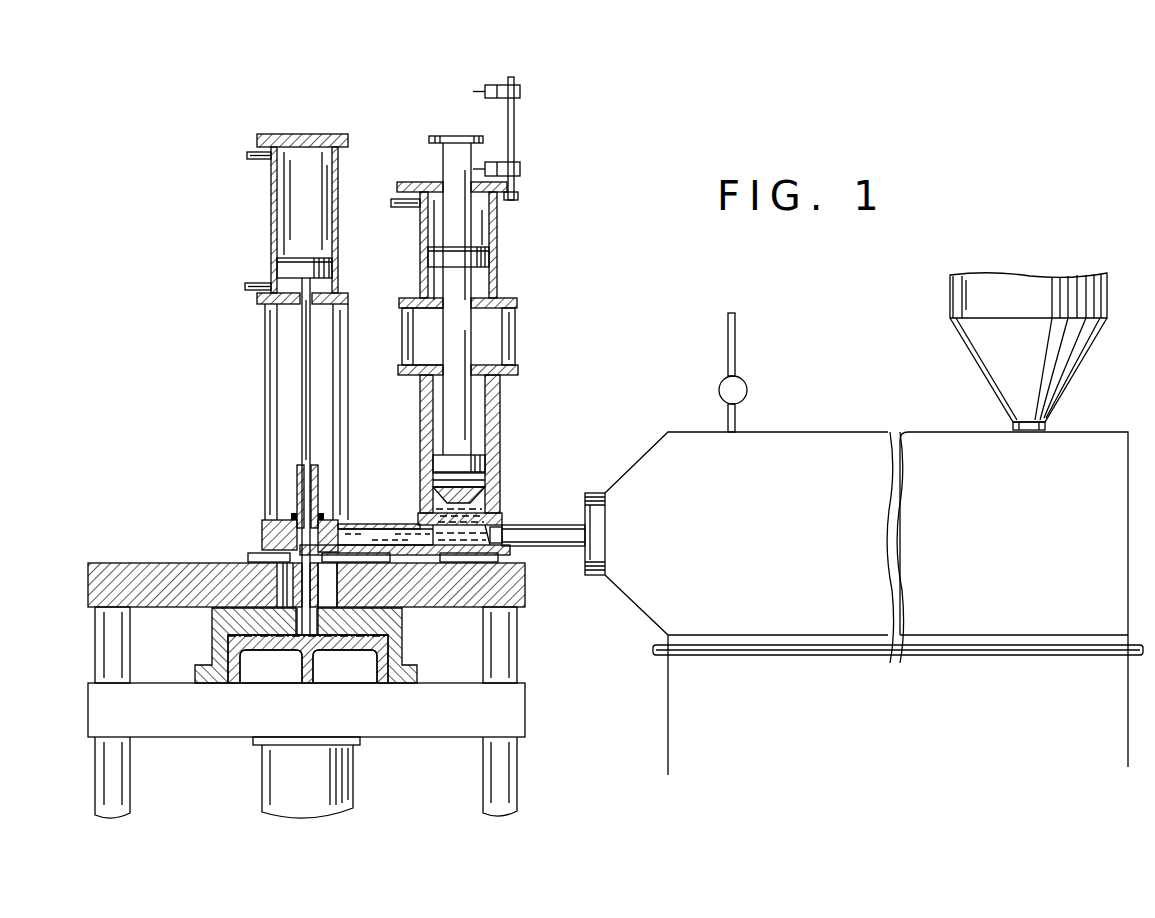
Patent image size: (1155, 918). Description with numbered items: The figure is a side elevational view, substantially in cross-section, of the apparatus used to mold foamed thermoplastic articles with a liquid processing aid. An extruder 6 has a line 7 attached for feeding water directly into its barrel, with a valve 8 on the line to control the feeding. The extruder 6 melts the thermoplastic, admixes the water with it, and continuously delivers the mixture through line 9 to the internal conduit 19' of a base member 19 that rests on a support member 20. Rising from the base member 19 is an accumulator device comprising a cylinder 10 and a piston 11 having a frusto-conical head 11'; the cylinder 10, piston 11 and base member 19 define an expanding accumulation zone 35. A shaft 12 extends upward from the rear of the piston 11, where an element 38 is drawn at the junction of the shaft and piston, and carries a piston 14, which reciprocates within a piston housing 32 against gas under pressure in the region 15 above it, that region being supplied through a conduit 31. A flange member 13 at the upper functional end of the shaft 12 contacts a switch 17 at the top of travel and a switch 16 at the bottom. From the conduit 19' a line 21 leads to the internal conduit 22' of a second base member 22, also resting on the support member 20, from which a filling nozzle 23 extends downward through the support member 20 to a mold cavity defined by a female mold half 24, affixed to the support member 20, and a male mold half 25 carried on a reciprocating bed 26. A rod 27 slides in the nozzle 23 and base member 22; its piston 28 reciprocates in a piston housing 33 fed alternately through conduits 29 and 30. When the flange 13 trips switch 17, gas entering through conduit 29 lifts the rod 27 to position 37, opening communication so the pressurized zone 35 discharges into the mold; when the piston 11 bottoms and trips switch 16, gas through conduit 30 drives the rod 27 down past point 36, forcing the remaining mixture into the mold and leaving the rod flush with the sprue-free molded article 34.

The extruder 6 is at (650, 447).
The line 7 is at (736, 337).
The valve 8 is at (719, 391).
The line 9 is at (540, 527).
The cylinder 10 is at (422, 421).
The piston 11 is at (436, 483).
The frusto-conical head 11' is at (434, 518).
The shaft 12 is at (470, 416).
The flange member 13 is at (442, 137).
The piston 14 is at (486, 254).
The region 15 is at (490, 220).
The switch 16 is at (516, 170).
The switch 17 is at (516, 92).
The base member 19 is at (405, 562).
The internal conduit 19' is at (511, 516).
The support member 20 is at (524, 594).
The line 21 is at (385, 556).
The second base member 22 is at (272, 531).
The internal conduit 22' is at (340, 489).
The filling nozzle 23 is at (271, 666).
The female mold half 24 is at (400, 621).
The male mold half 25 is at (377, 669).
The reciprocating bed 26 is at (246, 763).
The rod 27 is at (302, 392).
The piston 28 is at (327, 265).
The conduit 29 is at (262, 283).
The conduit 30 is at (262, 152).
The conduit 31 is at (408, 207).
The piston housing 32 is at (497, 285).
The piston housing 33 is at (337, 185).
The molded article 34 is at (226, 648).
The accumulation zone 35 is at (478, 498).
The point 36 is at (322, 540).
The position 37 is at (296, 520).
The piston head 38 is at (486, 470).